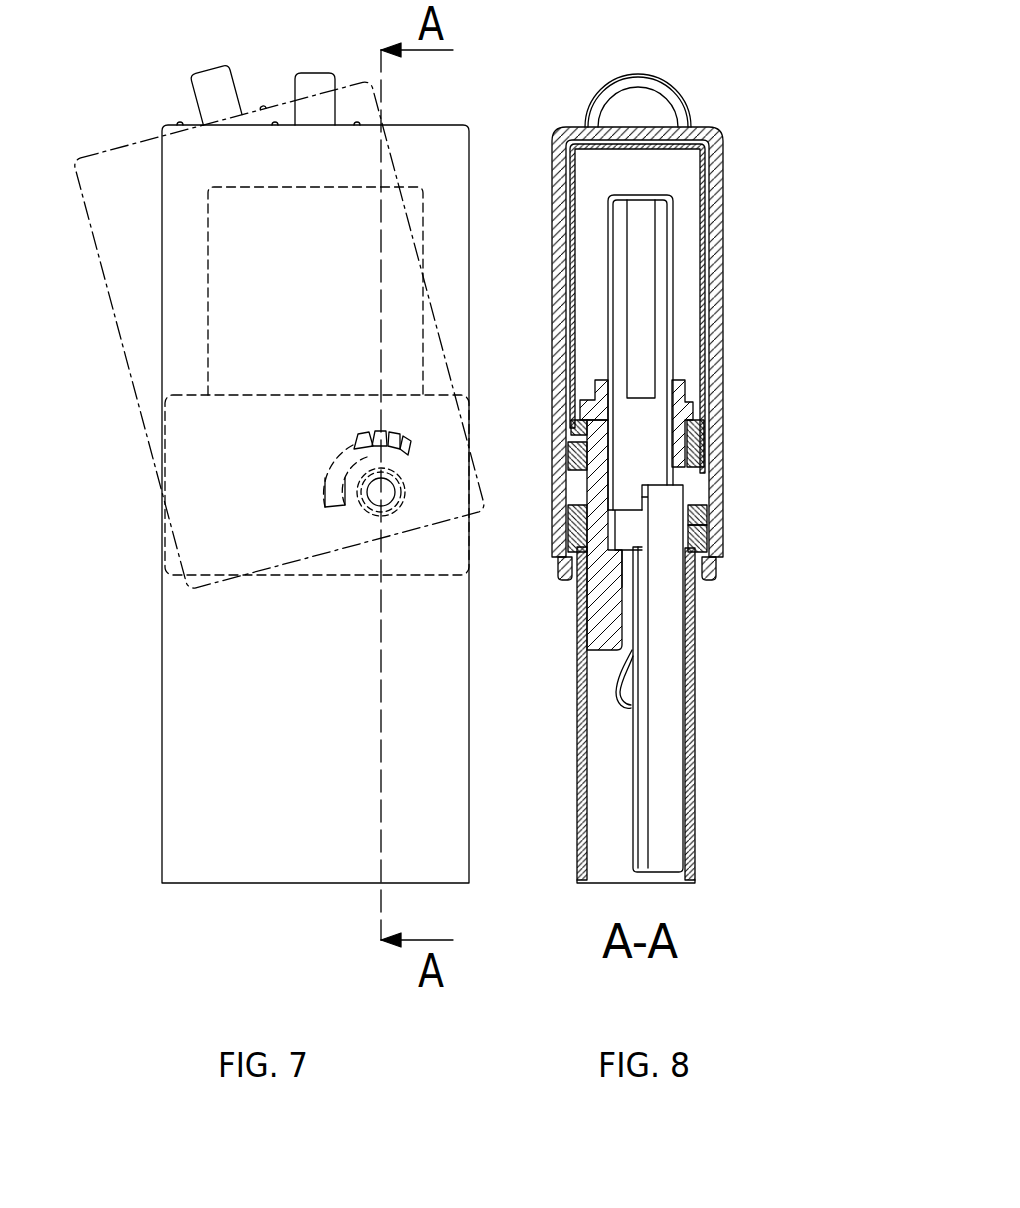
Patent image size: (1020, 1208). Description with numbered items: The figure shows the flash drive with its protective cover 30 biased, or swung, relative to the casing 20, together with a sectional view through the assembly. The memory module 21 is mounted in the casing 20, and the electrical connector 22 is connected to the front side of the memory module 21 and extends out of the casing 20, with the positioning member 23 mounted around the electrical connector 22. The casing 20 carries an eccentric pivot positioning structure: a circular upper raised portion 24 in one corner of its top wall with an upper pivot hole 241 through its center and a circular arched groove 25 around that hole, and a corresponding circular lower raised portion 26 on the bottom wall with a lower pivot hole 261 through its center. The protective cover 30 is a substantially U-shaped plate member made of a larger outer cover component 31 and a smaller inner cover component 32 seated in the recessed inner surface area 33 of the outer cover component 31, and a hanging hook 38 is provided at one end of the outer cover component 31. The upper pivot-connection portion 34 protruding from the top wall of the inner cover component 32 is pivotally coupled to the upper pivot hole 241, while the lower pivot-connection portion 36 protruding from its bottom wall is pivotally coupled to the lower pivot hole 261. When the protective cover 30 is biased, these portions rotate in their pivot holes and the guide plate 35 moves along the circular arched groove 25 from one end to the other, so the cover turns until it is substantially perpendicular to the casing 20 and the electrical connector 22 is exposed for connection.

In FIG. 7, the casing 20 is at (180, 707).
In FIG. 8, the casing 20 is at (696, 735).
In FIG. 8, the memory module 21 is at (668, 797).
In FIG. 7, the electrical connector 22 is at (430, 198).
In FIG. 8, the electrical connector 22 is at (646, 287).
In FIG. 8, the positioning member 23 is at (680, 410).
In FIG. 8, the circular upper raised portion 24 is at (567, 570).
In FIG. 7, the upper pivot hole 241 is at (392, 512).
In FIG. 8, the upper pivot hole 241 is at (567, 523).
In FIG. 7, the circular arched groove 25 is at (332, 475).
In FIG. 8, the circular lower raised portion 26 is at (712, 523).
In FIG. 8, the lower pivot hole 261 is at (710, 510).
In FIG. 7, the protective cover 30 is at (98, 293).
In FIG. 8, the protective cover 30 is at (714, 118).
In FIG. 8, the outer cover component 31 is at (718, 160).
In FIG. 8, the inner cover component 32 is at (710, 198).
In FIG. 8, the recessed inner surface area 33 is at (707, 577).
In FIG. 7, the upper pivot-connection portion 34 is at (396, 473).
In FIG. 8, the upper pivot-connection portion 34 is at (568, 487).
In FIG. 7, the guide plate 35 is at (387, 436).
In FIG. 8, the lower pivot-connection portion 36 is at (700, 480).
In FIG. 8, the hanging hook 38 is at (655, 90).